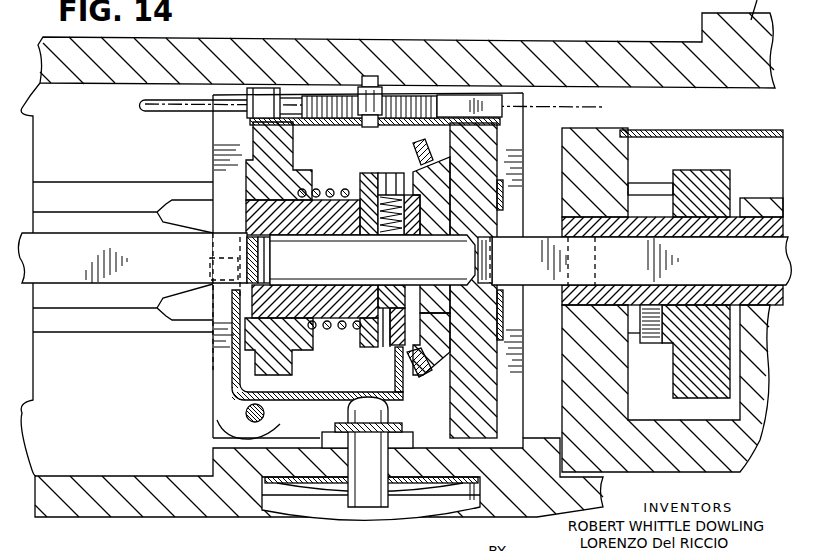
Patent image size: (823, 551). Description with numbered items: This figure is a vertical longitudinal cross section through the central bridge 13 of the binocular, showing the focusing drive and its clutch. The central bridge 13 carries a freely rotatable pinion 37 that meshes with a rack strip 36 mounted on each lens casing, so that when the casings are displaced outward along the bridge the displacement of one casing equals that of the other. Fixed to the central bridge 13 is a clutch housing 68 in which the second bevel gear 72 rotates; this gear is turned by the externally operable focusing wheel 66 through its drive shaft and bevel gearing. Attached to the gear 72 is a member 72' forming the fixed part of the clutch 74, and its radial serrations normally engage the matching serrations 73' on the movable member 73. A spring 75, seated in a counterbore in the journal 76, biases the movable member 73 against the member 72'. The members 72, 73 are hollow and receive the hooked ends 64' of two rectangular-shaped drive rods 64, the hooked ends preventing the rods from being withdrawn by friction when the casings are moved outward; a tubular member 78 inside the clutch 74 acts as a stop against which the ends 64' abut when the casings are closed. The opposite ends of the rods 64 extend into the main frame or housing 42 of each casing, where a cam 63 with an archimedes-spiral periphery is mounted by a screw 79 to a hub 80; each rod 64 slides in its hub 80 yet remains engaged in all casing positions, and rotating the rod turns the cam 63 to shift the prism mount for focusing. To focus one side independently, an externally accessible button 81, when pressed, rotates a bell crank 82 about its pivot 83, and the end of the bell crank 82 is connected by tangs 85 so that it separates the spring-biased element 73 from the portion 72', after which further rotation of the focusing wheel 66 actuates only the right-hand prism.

The central bridge 13 is at (569, 38).
The rack strip 36 is at (607, 116).
The pinion 37 is at (319, 118).
The main frame or housing structure 42 is at (570, 340).
The cam 63 is at (703, 172).
The rectangular-shaped drive rod 64 is at (404, 259).
The hooked end 64' is at (374, 259).
The focusing wheel 66 is at (186, 214).
The clutch housing 68 is at (263, 142).
The second bevel gear 72 is at (405, 151).
The clutch member 72' is at (404, 365).
The movable member 73 is at (303, 232).
The serrations 73' is at (388, 219).
The clutch 74 is at (363, 347).
The spring 75 is at (324, 190).
The journal 76 is at (299, 337).
The tubular member 78 is at (429, 266).
The screw 79 is at (645, 338).
The hub 80 is at (660, 195).
The button 81 is at (370, 512).
The bell crank 82 is at (233, 372).
The pivot 83 is at (245, 413).
The tangs 85 is at (233, 290).